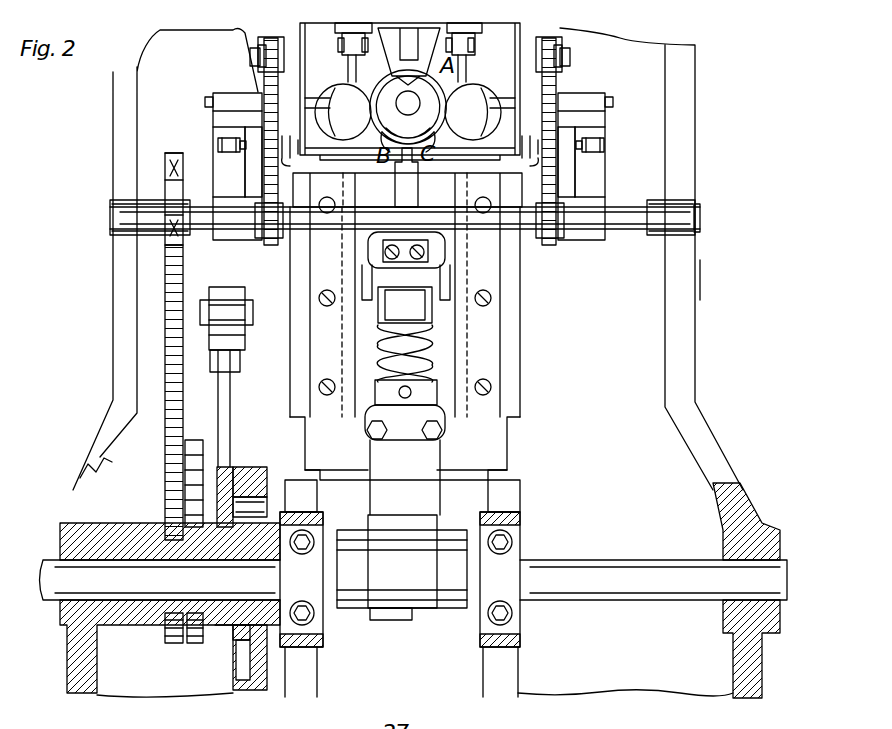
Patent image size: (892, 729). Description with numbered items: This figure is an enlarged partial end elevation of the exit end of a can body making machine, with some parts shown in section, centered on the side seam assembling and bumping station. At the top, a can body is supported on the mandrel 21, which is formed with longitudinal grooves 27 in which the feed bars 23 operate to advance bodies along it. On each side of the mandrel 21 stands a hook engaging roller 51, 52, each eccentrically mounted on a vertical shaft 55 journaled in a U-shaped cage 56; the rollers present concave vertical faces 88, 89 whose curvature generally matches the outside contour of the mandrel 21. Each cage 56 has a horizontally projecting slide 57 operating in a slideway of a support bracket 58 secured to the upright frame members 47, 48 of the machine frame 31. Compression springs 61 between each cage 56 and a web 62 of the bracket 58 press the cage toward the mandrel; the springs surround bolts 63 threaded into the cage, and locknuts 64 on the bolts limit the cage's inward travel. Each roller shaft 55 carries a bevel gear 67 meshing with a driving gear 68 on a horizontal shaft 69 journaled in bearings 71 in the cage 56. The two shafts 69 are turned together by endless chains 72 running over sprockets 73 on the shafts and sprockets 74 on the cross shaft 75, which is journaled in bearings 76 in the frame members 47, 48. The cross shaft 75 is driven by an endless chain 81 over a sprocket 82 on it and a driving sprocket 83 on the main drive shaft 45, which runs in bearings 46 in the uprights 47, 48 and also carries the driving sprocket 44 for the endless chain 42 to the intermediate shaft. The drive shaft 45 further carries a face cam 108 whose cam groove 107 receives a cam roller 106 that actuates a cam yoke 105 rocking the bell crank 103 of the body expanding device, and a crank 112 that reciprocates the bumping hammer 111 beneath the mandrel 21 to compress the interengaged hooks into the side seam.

The mandrel 21 is at (408, 111).
The feed bars 23 is at (408, 68).
The longitudinal grooves 27 is at (419, 101).
The frame 31 is at (675, 365).
The endless chain 42 is at (192, 460).
The driving sprocket 44 is at (200, 625).
The drive shaft 45 is at (645, 578).
The bearings 46 is at (520, 563).
The upright frame member 47 is at (115, 268).
The upright frame member 48 is at (655, 310).
The hook engaging roller 51 is at (343, 112).
The hook engaging roller 52 is at (473, 112).
The vertical shafts 55 is at (408, 78).
The cages 56 is at (330, 52).
The slide 57 is at (208, 100).
The support bracket 58 is at (222, 160).
The compression springs 61 is at (340, 160).
The web 62 is at (248, 183).
The bolts 63 is at (220, 147).
The locknuts 64 is at (226, 140).
The bevel gear 67 is at (366, 54).
The driving gears 68 is at (341, 60).
The horizontally disposed shafts 69 is at (254, 62).
The bearings 71 is at (278, 52).
The endless chains 72 is at (262, 168).
The sprockets 73 is at (262, 55).
The sprockets 74 is at (258, 232).
The cross shaft 75 is at (702, 218).
The bearings 76 is at (123, 213).
The endless chain 81 is at (165, 432).
The sprocket 82 is at (165, 175).
The driving sprocket 83 is at (168, 625).
The concave vertical face 88 is at (330, 100).
The concave vertical face 89 is at (487, 100).
The bell crank 103 is at (225, 305).
The cam yoke 105 is at (225, 392).
The cam roller 106 is at (260, 500).
The cam groove 107 is at (248, 472).
The face cam 108 is at (250, 680).
The bumping hammer 111 is at (405, 165).
The crank 112 is at (448, 540).